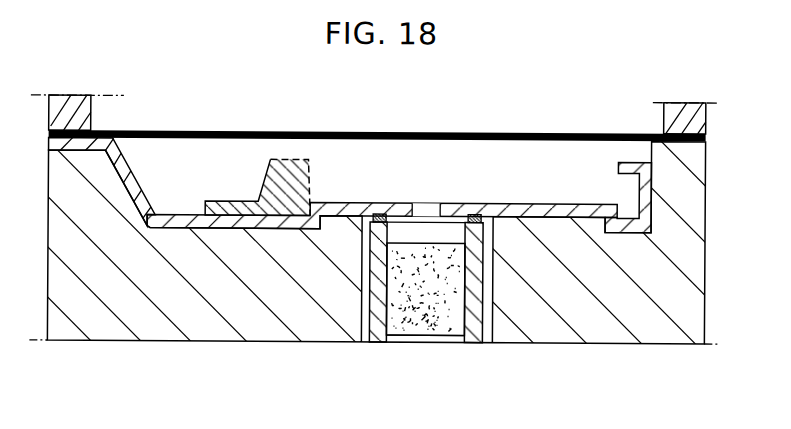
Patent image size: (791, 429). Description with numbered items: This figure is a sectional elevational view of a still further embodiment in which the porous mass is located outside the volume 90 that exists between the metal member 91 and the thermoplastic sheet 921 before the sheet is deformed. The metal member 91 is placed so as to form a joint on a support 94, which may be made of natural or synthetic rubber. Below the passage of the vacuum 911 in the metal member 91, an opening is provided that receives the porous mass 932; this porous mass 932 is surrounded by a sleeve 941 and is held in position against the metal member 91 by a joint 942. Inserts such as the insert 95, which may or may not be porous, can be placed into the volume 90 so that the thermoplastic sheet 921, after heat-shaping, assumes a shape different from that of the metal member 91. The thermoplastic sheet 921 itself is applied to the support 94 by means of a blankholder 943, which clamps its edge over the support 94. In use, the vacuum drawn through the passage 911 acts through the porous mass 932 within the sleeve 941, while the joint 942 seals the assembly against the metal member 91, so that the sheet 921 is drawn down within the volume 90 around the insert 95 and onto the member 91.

The volume 90 is at (533, 162).
The metal member 91 is at (332, 208).
The passage of the vacuum 911 is at (422, 210).
The thermoplastic sheet 921 is at (600, 133).
The porous mass 932 is at (435, 314).
The support 94 is at (600, 332).
The sleeve 941 is at (381, 327).
The joint 942 is at (477, 210).
The blankholder 943 is at (680, 112).
The insert 95 is at (273, 165).